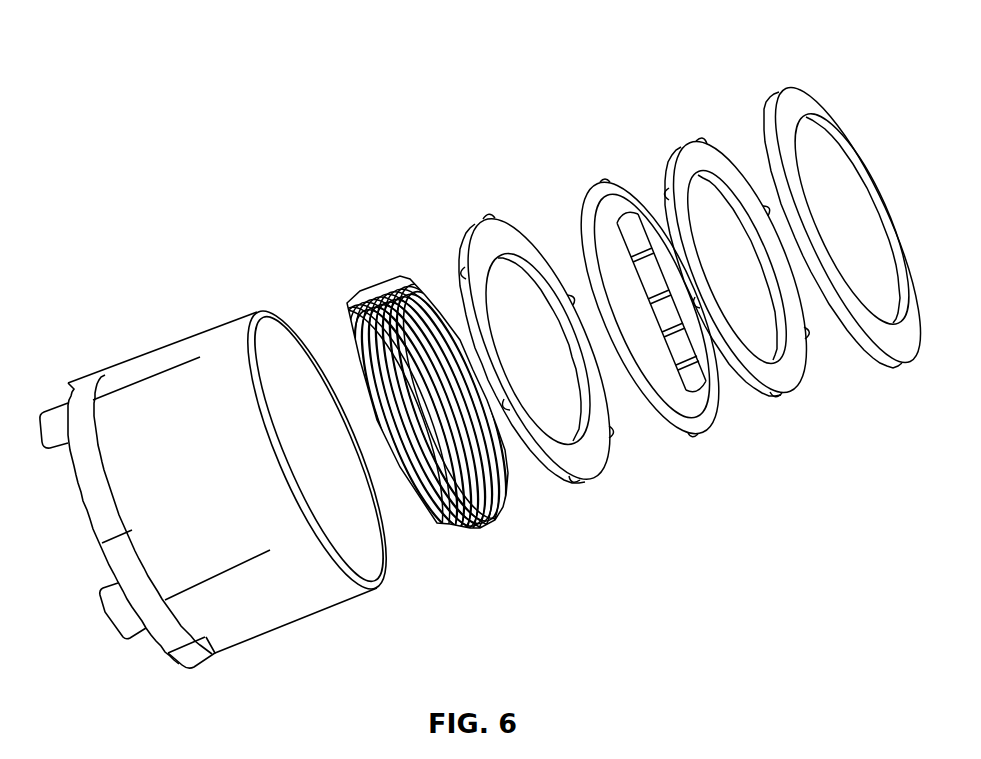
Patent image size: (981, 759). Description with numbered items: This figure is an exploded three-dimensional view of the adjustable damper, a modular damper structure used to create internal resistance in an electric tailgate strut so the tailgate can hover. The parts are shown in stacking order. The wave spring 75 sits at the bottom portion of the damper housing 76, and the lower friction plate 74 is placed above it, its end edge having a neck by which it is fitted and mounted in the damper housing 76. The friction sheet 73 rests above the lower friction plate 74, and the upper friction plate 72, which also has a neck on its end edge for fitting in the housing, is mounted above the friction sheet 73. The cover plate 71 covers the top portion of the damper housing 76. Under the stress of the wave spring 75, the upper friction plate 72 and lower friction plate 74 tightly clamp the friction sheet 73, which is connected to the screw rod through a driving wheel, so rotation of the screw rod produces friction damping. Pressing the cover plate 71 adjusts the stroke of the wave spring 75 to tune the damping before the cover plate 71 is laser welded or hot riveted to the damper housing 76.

The cover plate 71 is at (783, 110).
The upper friction plate 72 is at (700, 133).
The friction sheet 73 is at (600, 180).
The lower friction plate 74 is at (488, 217).
The wave spring 75 is at (398, 270).
The damper housing 76 is at (240, 387).